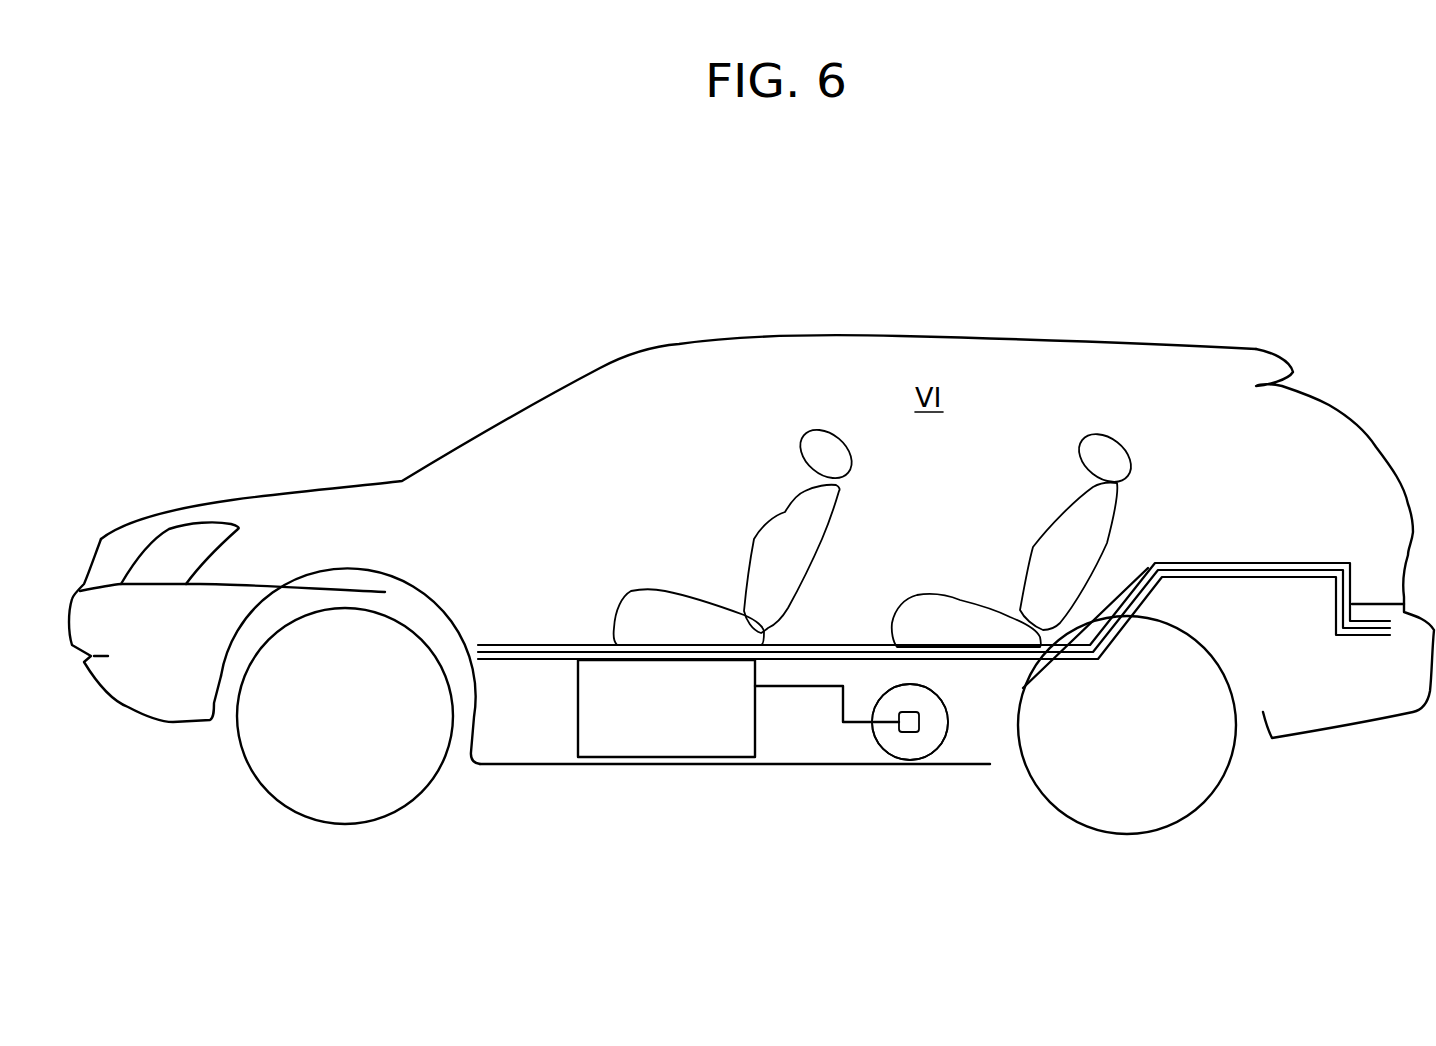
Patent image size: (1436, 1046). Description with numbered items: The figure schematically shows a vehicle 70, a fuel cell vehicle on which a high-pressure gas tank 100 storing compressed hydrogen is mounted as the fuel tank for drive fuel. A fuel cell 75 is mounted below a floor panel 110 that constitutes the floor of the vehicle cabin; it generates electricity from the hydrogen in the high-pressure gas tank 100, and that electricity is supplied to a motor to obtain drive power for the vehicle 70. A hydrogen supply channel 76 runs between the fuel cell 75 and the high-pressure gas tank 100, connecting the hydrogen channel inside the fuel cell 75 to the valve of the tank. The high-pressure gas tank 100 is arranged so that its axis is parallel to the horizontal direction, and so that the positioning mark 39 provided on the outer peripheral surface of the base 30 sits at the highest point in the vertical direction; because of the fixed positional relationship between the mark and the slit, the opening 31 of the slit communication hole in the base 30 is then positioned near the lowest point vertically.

The vehicle 70 is at (1318, 314).
The floor panel 110 is at (545, 643).
The fuel cell 75 is at (678, 740).
The hydrogen supply channel 76 is at (802, 690).
The high-pressure gas tank 100 is at (923, 769).
The opening of the slit communication hole 31 is at (940, 752).
The positioning mark 39 is at (925, 678).
The base 30 is at (910, 733).